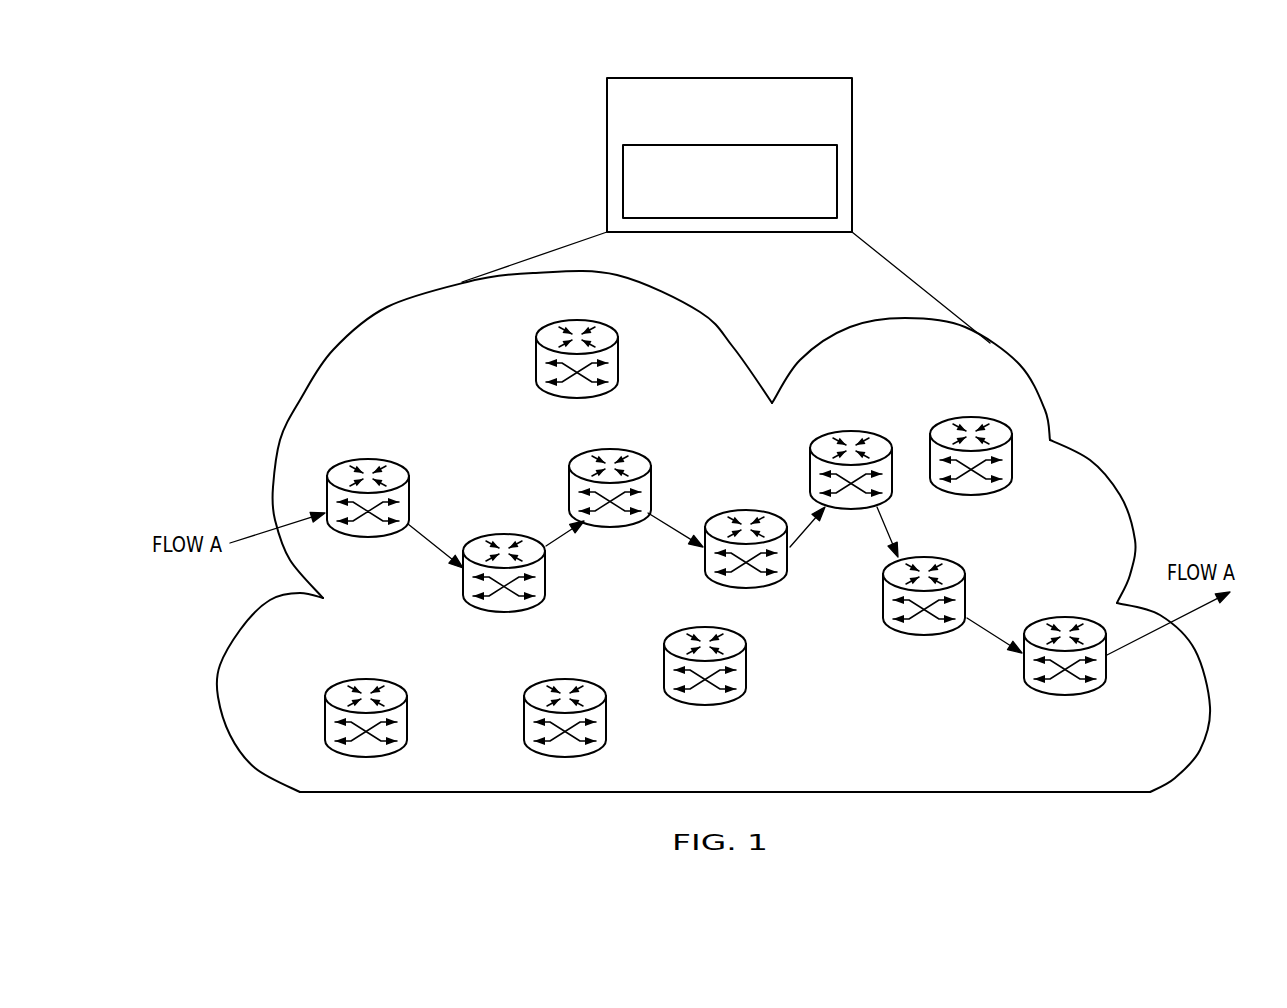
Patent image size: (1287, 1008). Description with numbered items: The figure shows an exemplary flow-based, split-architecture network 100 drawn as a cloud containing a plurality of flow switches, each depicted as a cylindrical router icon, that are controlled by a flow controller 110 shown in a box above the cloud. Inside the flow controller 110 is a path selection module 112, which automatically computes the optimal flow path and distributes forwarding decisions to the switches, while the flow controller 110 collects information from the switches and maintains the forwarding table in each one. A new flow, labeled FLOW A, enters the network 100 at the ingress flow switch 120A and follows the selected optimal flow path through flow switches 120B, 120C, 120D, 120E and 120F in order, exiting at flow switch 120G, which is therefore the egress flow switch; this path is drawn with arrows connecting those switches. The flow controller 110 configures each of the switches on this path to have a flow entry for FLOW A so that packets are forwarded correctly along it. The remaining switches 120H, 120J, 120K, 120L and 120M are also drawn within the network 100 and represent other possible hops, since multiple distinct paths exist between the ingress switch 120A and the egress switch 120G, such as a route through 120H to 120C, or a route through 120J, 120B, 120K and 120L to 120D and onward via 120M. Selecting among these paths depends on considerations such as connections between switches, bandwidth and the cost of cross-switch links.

The split-architecture network 100 is at (978, 793).
The flow controller 110 is at (713, 138).
The path selection module 112 is at (763, 210).
The ingress flow switch 120A is at (368, 513).
The flow switch 120B is at (504, 588).
The flow switch 120C is at (610, 502).
The flow switch 120D is at (746, 563).
The flow switch 120E is at (851, 485).
The flow switch 120F is at (924, 612).
The egress flow switch 120G is at (1065, 672).
The flow switch 120H is at (577, 374).
The flow switch 120J is at (366, 733).
The flow switch 120K is at (565, 733).
The flow switch 120L is at (705, 682).
The flow switch 120M is at (971, 472).